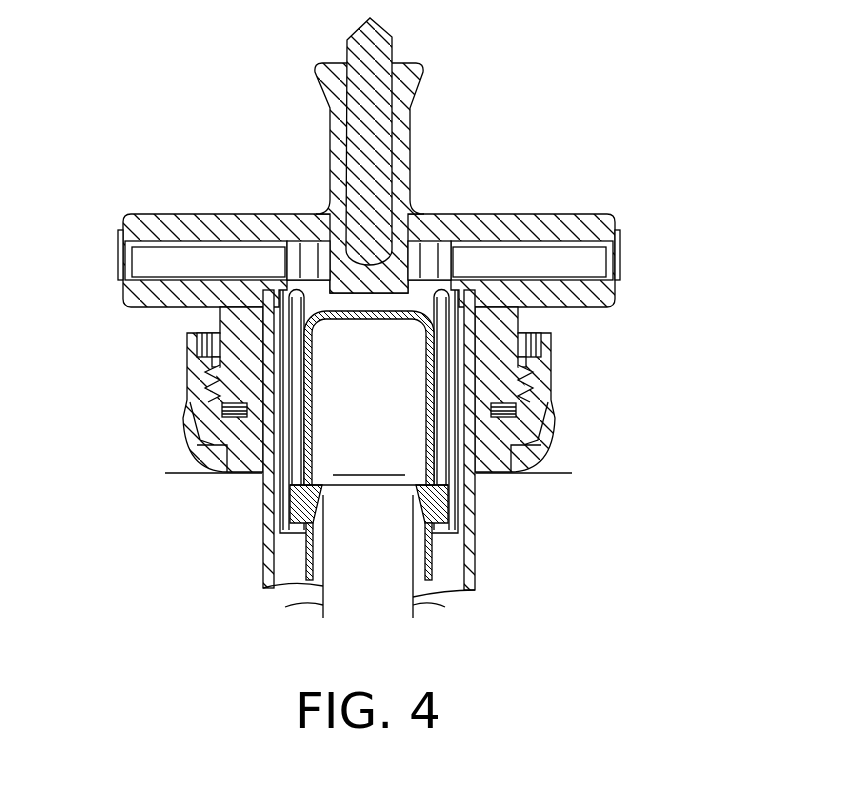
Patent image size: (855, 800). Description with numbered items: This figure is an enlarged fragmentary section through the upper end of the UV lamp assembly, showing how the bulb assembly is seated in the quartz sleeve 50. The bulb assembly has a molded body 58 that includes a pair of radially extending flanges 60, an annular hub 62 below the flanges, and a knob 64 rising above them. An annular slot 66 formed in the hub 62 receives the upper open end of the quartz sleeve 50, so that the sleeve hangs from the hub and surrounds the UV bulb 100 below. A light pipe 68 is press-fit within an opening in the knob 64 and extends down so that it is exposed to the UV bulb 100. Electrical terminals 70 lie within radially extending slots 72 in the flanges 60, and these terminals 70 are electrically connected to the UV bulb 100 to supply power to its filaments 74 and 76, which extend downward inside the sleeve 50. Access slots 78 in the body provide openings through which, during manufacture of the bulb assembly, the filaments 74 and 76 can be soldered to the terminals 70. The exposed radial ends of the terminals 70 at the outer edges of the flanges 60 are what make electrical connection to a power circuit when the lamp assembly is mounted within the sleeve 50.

The quartz sleeve 50 is at (462, 592).
The molded body 58 is at (233, 314).
The flanges 60 is at (150, 223).
The annular hub 62 is at (507, 325).
The knob 64 is at (398, 105).
The annular slot 66 is at (348, 308).
The light pipe 68 is at (383, 52).
The electrical terminals 70 is at (124, 253).
The radially extending slots 72 is at (210, 253).
The filament 74 is at (305, 235).
The filament 76 is at (463, 240).
The access slots 78 is at (300, 252).
The UV bulb 100 is at (455, 572).